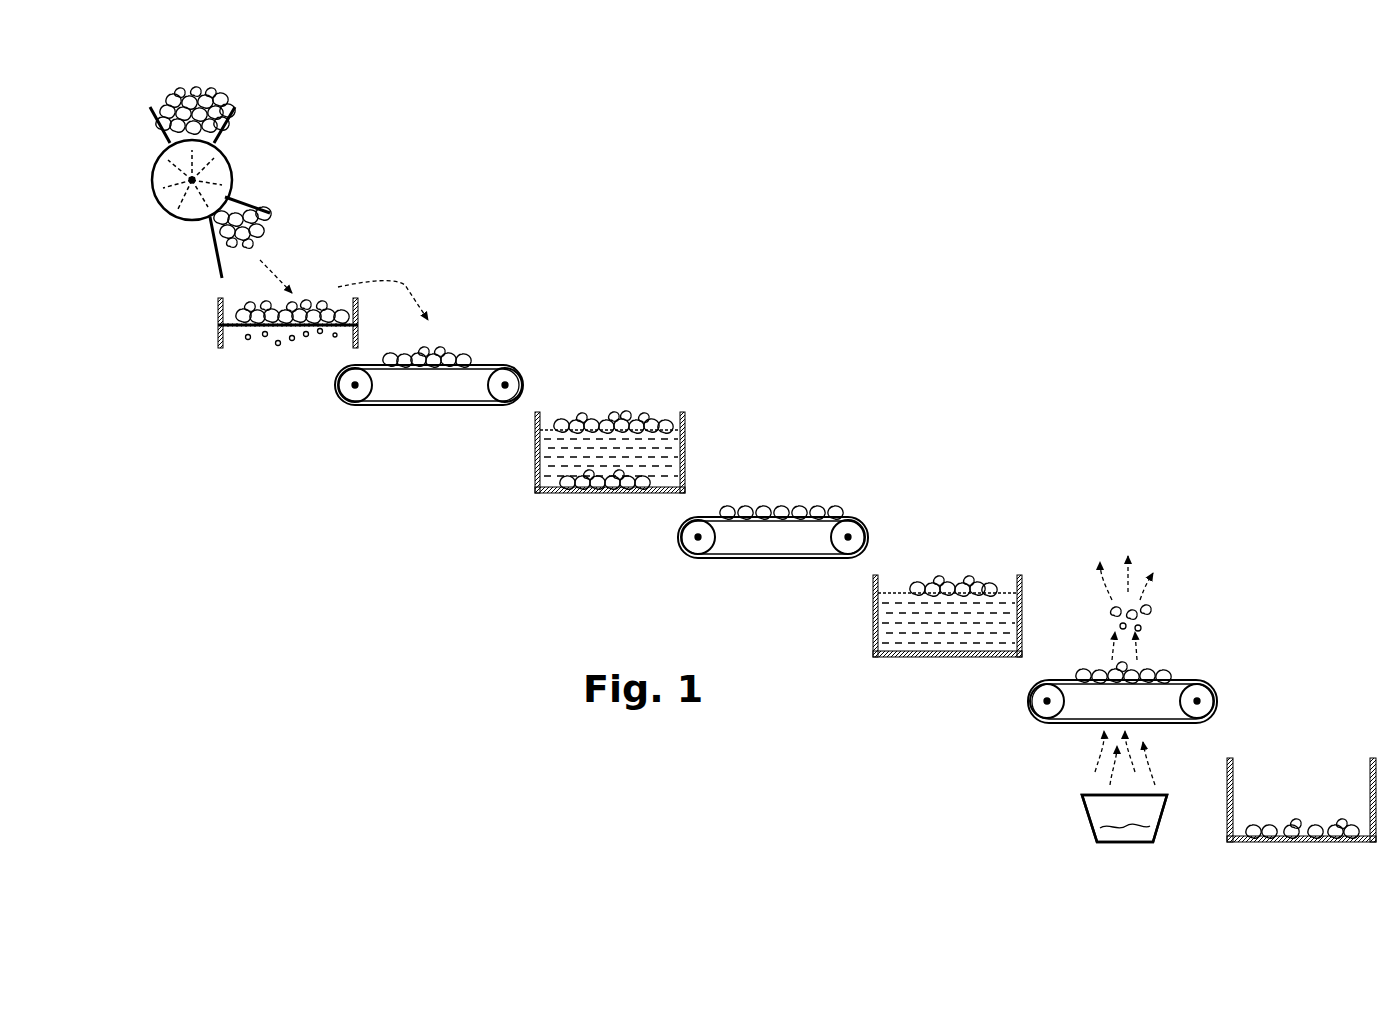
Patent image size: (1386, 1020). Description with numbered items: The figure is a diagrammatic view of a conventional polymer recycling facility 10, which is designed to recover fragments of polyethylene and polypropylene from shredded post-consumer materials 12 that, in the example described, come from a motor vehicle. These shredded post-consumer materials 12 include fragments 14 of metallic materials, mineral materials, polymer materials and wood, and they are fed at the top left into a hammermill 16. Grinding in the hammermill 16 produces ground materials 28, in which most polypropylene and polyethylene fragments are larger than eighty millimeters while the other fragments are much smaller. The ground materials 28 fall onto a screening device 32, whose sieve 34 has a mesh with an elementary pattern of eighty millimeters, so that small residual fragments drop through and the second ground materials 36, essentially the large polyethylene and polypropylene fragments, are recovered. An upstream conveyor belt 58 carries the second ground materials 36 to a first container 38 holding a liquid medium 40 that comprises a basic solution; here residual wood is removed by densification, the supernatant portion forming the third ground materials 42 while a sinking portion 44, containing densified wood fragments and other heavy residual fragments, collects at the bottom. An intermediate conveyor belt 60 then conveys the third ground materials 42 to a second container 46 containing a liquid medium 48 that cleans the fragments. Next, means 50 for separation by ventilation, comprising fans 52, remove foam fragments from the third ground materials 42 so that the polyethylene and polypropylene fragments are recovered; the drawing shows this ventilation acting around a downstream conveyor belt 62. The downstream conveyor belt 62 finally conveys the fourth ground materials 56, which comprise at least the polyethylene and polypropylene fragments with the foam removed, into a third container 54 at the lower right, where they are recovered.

The polymer recycling facility 10 is at (940, 346).
The shredded post-consumer materials 12 is at (187, 103).
The fragments 14 is at (226, 100).
The hammermill 16 is at (147, 186).
The ground materials 28 is at (220, 264).
The screening device 32 is at (216, 327).
The sieve 34 is at (230, 330).
The second ground materials 36 is at (310, 296).
The first container 38 is at (535, 481).
The liquid medium 40 is at (537, 463).
The third ground materials 42 is at (640, 412).
The sinking portion 44 is at (587, 485).
The second container 46 is at (900, 635).
The liquid medium 48 is at (872, 638).
The means for separation by ventilation 50 is at (1167, 821).
The fans 52 is at (1101, 826).
The third container 54 is at (1265, 840).
The fourth ground materials 56 is at (1280, 772).
The upstream conveyor belt 58 is at (436, 406).
The intermediate conveyor belt 60 is at (775, 560).
The downstream conveyor belt 62 is at (1067, 724).